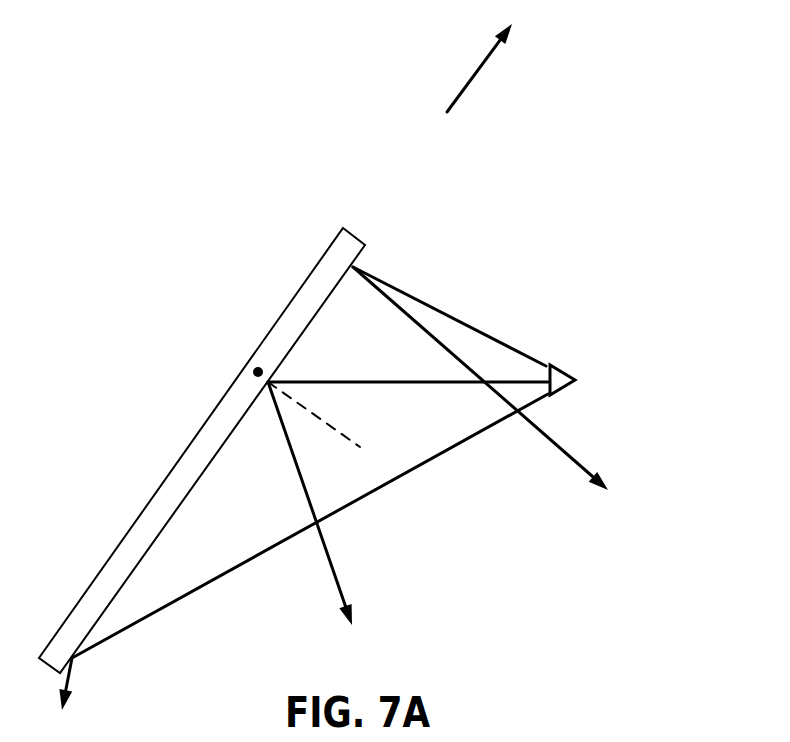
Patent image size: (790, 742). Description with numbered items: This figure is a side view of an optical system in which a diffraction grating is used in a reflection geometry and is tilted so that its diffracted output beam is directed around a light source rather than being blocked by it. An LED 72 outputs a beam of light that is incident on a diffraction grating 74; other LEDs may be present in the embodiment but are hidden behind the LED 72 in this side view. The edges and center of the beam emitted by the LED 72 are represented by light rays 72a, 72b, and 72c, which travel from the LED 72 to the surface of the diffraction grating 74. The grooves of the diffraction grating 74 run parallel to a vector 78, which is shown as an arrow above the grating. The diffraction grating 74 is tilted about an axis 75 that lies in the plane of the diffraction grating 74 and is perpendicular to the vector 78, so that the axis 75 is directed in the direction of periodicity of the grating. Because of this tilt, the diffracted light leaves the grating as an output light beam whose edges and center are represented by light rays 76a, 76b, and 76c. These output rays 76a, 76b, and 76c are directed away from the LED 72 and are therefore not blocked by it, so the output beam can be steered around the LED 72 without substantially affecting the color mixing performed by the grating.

The LED 72 is at (577, 379).
The light ray 72a is at (443, 312).
The light ray 72b is at (417, 468).
The light ray 72c is at (428, 384).
The diffraction grating 74 is at (352, 238).
The axis 75 is at (253, 371).
The light ray 76a is at (580, 463).
The light ray 76b is at (67, 682).
The light ray 76c is at (338, 580).
The vector 78 is at (470, 83).